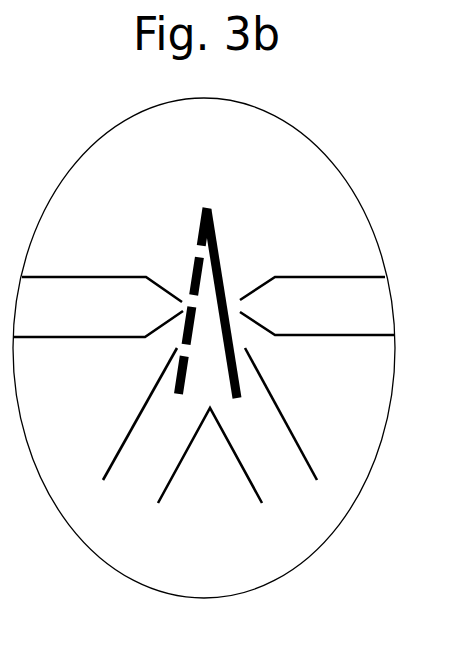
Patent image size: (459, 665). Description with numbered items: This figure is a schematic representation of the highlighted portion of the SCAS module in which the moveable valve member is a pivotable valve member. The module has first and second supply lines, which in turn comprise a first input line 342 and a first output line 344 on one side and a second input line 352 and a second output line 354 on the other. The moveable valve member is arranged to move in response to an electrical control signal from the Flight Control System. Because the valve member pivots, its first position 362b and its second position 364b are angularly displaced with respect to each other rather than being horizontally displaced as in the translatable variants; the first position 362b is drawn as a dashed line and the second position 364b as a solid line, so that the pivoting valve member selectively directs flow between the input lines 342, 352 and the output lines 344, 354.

The first input line 342 is at (63, 297).
The first output line 344 is at (153, 415).
The second input line 352 is at (348, 303).
The second output line 354 is at (260, 430).
The first position 362b is at (198, 258).
The second position 364b is at (229, 257).